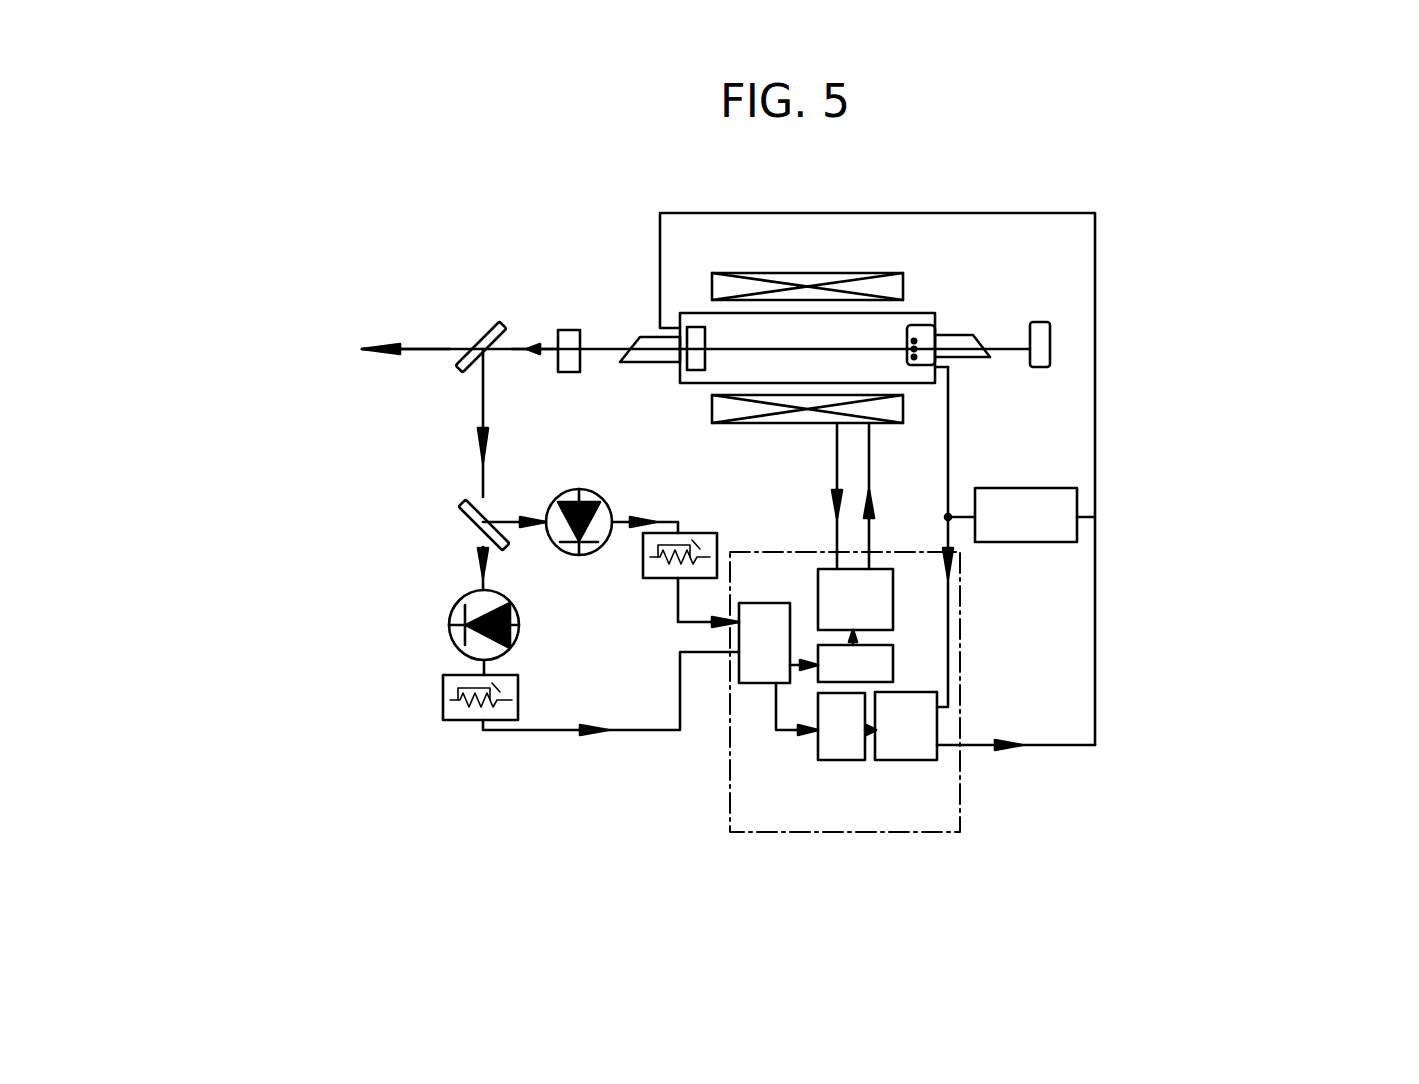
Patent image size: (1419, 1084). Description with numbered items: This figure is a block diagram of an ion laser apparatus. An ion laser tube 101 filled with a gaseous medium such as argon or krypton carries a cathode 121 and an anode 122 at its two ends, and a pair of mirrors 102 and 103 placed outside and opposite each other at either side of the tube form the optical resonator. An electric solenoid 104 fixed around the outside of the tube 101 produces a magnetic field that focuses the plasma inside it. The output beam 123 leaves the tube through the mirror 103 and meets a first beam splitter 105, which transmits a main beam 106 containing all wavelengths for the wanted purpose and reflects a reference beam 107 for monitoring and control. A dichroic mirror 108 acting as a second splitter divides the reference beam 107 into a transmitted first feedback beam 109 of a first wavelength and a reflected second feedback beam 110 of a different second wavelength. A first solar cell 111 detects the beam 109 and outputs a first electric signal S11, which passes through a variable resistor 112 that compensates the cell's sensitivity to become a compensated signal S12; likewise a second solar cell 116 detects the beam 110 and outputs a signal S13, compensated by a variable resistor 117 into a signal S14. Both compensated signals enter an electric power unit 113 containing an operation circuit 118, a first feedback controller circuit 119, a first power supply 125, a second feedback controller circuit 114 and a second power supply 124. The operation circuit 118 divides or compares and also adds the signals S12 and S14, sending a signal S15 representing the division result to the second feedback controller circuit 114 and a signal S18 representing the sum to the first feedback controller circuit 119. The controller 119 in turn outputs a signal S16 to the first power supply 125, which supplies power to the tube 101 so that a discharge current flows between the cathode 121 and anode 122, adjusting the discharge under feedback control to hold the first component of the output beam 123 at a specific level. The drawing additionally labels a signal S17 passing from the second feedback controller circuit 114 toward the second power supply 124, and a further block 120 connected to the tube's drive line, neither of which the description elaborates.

The ion laser tube 101 is at (920, 313).
The optical mirror 102 is at (1050, 349).
The optical mirror 103 is at (567, 330).
The electric solenoid 104 is at (767, 273).
The first optical beam splitter 105 is at (470, 328).
The main optical beam 106 is at (408, 349).
The reference optical beam 107 is at (483, 415).
The dichroic mirror 108 is at (462, 515).
The first feedback beam 109 is at (482, 565).
The second feedback beam 110 is at (515, 520).
The first solar cell 111 is at (450, 625).
The variable resistor 112 is at (460, 713).
The electric power unit 113 is at (828, 832).
The second feedback controller circuit 114 is at (878, 663).
The second solar cell 116 is at (590, 488).
The variable resistor 117 is at (703, 543).
The operation or calculation circuit 118 is at (753, 670).
The first feedback controller circuit 119 is at (833, 760).
The trigger circuit 120 is at (1065, 503).
The cathode 121 is at (940, 323).
The anode 122 is at (690, 370).
The optical output beam 123 is at (535, 340).
The second power supply 124 is at (880, 612).
The first power supply 125 is at (903, 753).
The first electric signal S11 is at (487, 664).
The compensated electric signal S12 is at (568, 733).
The second electric signal S13 is at (667, 523).
The compensated electric signal S14 is at (677, 615).
The electric signal S15 is at (795, 665).
The electric signal S16 is at (868, 735).
The signal S17 is at (858, 638).
The electric signal S18 is at (783, 730).